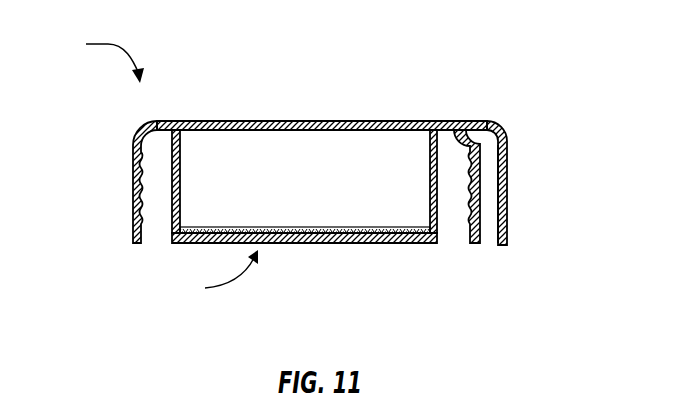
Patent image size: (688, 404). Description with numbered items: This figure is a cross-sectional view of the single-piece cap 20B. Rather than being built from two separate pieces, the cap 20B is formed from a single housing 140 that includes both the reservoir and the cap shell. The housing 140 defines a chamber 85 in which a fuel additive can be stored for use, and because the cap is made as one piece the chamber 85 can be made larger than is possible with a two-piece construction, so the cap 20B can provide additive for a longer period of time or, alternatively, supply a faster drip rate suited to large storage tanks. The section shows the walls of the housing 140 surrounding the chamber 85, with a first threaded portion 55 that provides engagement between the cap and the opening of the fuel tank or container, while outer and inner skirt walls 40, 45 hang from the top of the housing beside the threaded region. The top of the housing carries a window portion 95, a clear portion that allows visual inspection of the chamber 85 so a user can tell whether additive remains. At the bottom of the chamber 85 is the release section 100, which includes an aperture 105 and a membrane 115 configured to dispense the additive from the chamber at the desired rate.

The cap 20B is at (92, 59).
The outer skirt wall 40 is at (507, 228).
The inner skirt wall 45 is at (470, 234).
The first threaded portion 55 is at (148, 235).
The chamber 85 is at (250, 138).
The window portion 95 is at (313, 128).
The release section 100 is at (209, 276).
The aperture 105 is at (304, 244).
The membrane 115 is at (215, 228).
The housing 140 is at (507, 178).